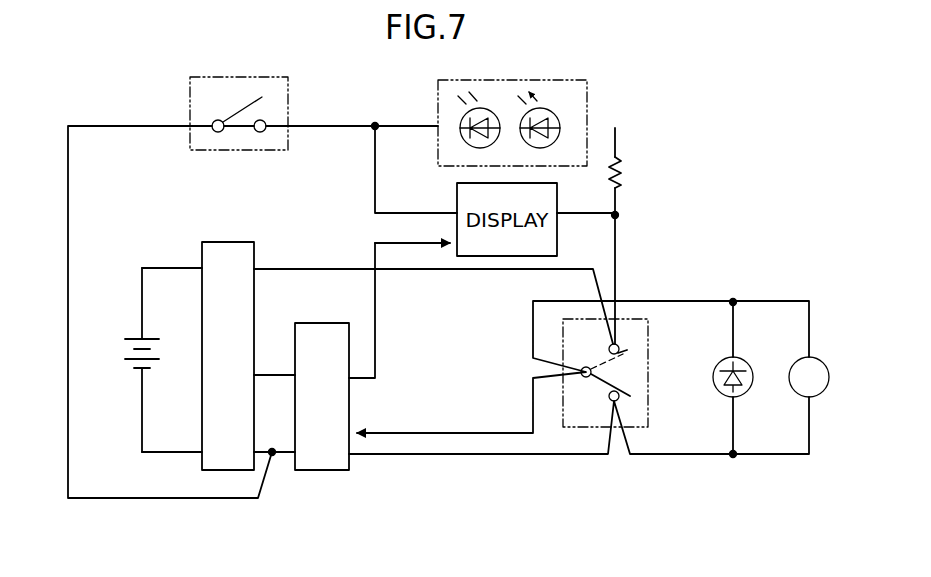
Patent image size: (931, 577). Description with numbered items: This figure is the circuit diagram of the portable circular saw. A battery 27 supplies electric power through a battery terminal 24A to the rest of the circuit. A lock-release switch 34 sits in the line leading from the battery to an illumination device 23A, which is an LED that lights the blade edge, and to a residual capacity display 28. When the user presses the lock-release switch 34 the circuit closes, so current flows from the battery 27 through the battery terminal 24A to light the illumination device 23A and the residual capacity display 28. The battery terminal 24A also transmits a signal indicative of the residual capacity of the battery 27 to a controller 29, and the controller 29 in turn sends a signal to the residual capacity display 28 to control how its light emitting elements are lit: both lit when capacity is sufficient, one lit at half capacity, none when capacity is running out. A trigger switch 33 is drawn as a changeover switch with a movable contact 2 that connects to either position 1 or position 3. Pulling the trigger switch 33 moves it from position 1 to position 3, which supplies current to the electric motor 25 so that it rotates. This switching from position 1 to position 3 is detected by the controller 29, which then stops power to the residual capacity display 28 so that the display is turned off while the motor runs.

The lock-release switch 34 is at (288, 81).
The illumination device 23A is at (587, 80).
The residual capacity display 28 is at (557, 202).
The battery 27 is at (118, 364).
The battery terminal 24A is at (226, 470).
The controller 29 is at (321, 470).
The trigger switch 33 is at (605, 406).
The electric motor 25 is at (796, 394).
The position 1 is at (607, 404).
The switch contact 2 is at (582, 361).
The position 3 is at (606, 341).